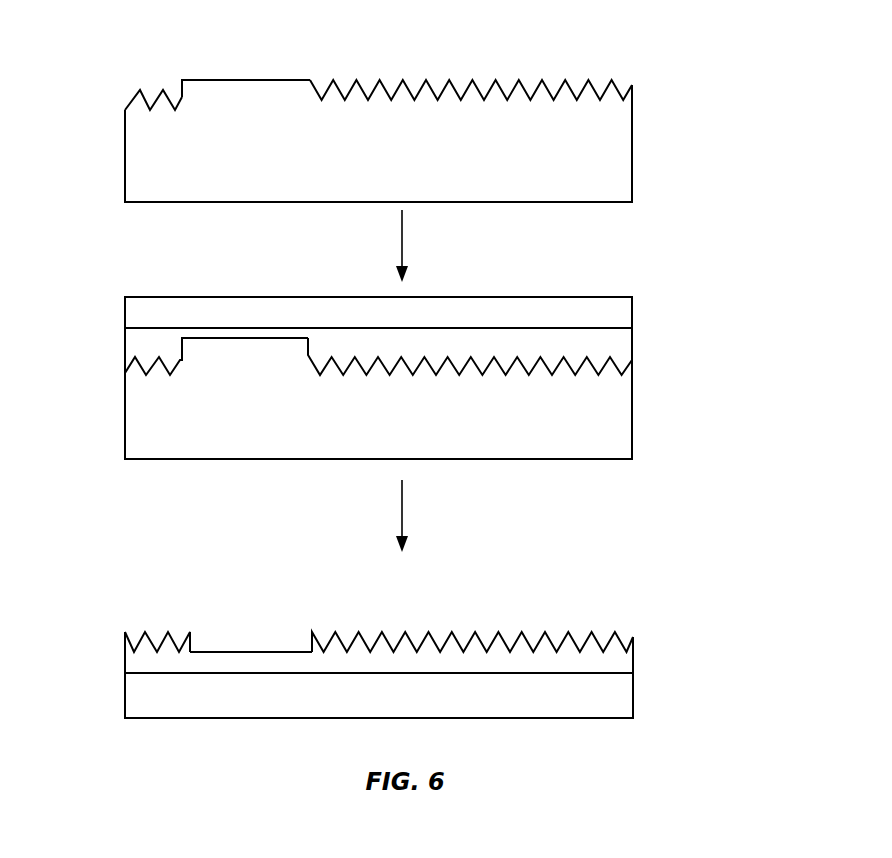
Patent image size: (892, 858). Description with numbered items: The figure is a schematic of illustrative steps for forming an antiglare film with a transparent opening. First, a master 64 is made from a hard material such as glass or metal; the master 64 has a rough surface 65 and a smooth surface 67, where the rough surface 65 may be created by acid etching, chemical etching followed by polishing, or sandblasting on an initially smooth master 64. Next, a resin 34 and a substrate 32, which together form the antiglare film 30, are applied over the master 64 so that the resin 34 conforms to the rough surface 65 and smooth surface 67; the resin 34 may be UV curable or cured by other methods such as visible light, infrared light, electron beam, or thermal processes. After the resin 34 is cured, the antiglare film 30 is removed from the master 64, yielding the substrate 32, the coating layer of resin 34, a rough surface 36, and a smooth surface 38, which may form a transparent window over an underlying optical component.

The antiglare film 30 is at (438, 506).
The substrate 32 is at (625, 317).
The resin 34 is at (411, 509).
The rough surface 36 is at (158, 645).
The smooth surface 38 is at (245, 650).
The master 64 is at (623, 140).
The rough surface 65 is at (148, 98).
The smooth surface 67 is at (260, 80).